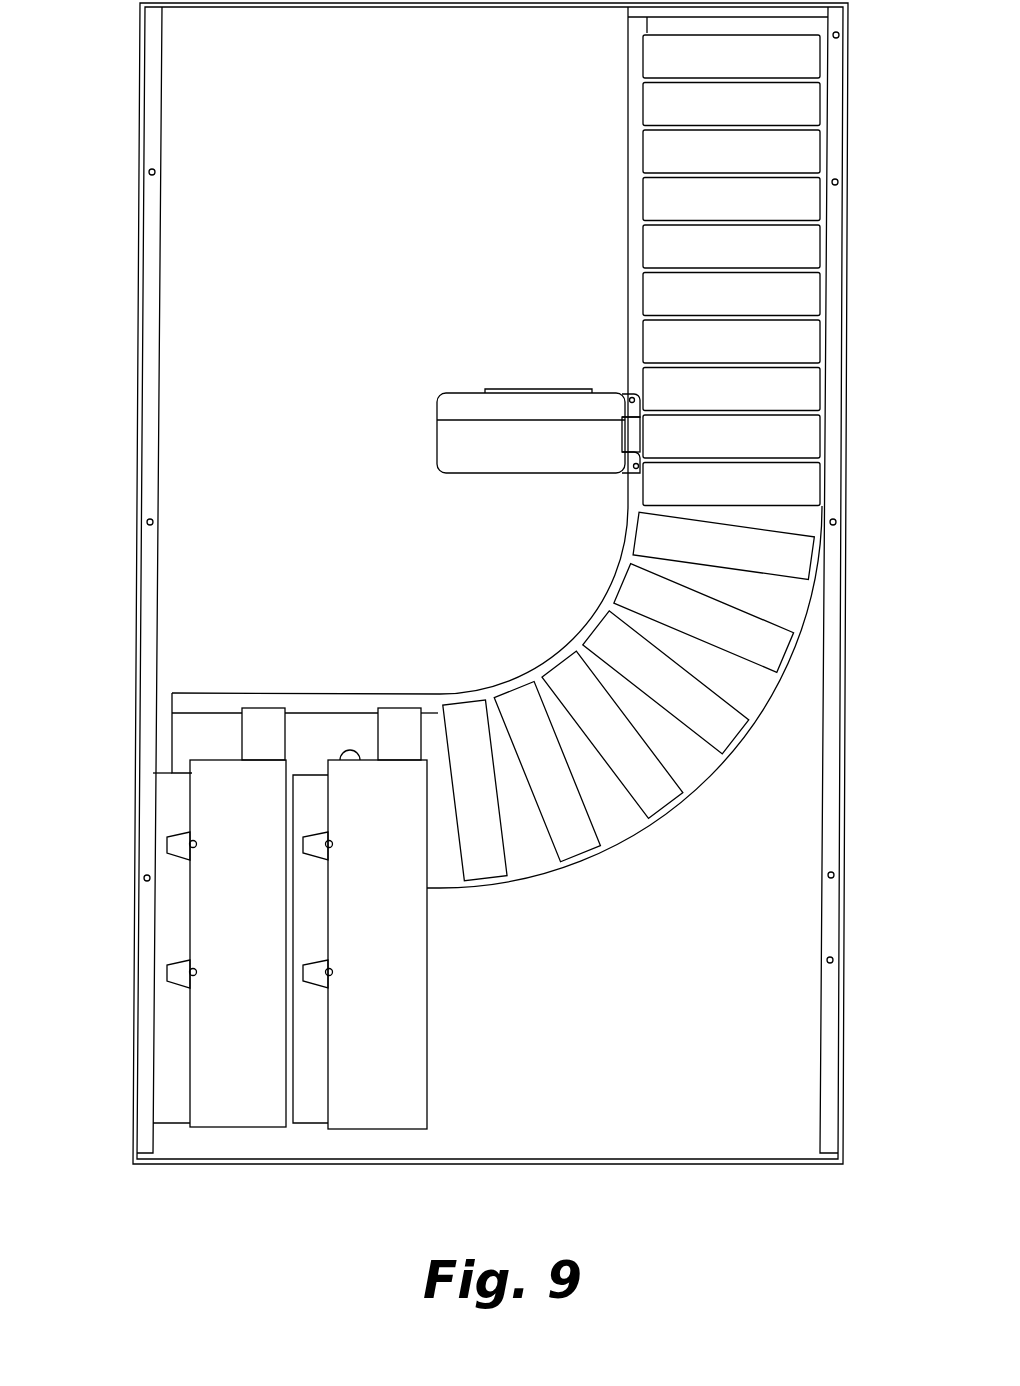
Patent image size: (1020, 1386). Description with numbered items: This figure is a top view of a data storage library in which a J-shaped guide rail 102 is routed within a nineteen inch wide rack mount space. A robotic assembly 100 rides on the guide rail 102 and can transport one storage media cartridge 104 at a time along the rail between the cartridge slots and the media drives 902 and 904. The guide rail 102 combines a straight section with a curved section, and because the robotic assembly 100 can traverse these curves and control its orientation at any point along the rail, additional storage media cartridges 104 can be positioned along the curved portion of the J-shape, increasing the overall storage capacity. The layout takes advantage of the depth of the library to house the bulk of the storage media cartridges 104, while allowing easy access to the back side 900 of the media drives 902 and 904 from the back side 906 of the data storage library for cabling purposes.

The robotic assembly 100 is at (446, 382).
The guide rail 102 is at (697, 777).
The storage media cartridge 104 is at (780, 647).
The back side of the media drives 900 is at (292, 965).
The media drive 902 is at (410, 1108).
The media drive 904 is at (168, 1107).
The back side of the data storage library 906 is at (618, 1172).